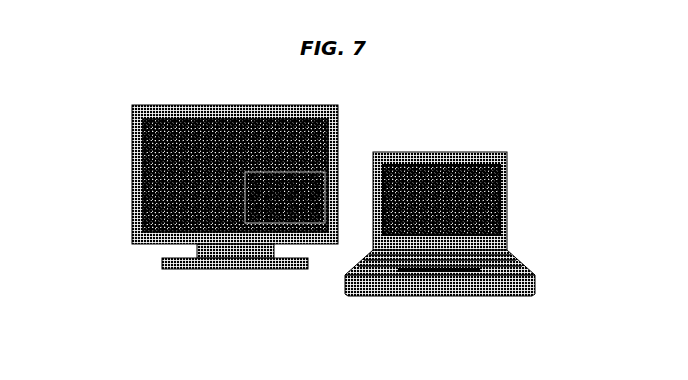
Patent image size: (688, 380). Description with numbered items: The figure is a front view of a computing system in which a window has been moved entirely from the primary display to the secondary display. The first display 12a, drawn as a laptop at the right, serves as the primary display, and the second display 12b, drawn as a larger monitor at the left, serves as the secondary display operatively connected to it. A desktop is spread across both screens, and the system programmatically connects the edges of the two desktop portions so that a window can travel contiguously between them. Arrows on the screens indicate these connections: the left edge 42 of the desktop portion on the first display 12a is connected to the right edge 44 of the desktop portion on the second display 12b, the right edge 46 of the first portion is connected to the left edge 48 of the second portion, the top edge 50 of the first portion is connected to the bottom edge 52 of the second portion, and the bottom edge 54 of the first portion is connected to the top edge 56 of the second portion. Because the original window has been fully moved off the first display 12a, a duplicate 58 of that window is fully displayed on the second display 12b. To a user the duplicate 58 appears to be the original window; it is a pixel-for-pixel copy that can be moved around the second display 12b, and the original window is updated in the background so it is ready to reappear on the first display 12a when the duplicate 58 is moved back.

The first display 12a is at (505, 223).
The second display 12b is at (127, 153).
The left edge of the first desktop portion 42 is at (393, 183).
The right edge of the second desktop portion 44 is at (318, 143).
The right edge of the first desktop portion 46 is at (489, 200).
The left edge of the second desktop portion 48 is at (152, 125).
The top edge of the first desktop portion 50 is at (423, 168).
The bottom edge of the second desktop portion 52 is at (159, 220).
The bottom edge of the first desktop portion 54 is at (418, 223).
The top edge of the second desktop portion 56 is at (191, 126).
The duplicate 58 is at (297, 180).